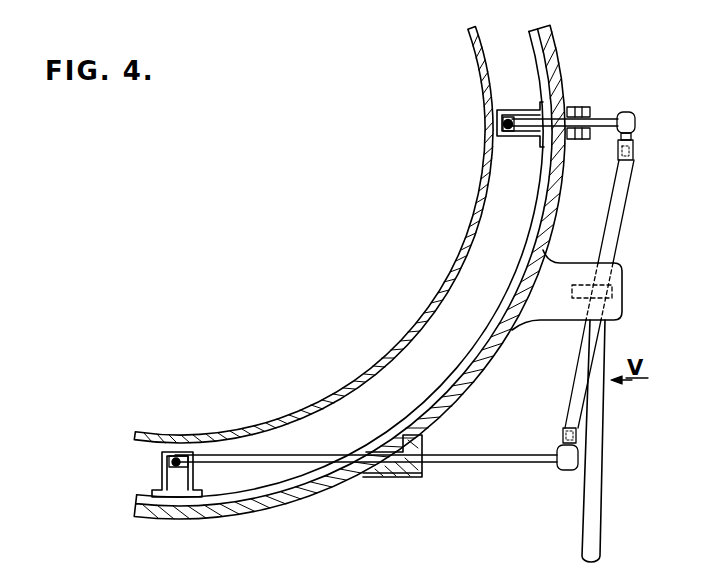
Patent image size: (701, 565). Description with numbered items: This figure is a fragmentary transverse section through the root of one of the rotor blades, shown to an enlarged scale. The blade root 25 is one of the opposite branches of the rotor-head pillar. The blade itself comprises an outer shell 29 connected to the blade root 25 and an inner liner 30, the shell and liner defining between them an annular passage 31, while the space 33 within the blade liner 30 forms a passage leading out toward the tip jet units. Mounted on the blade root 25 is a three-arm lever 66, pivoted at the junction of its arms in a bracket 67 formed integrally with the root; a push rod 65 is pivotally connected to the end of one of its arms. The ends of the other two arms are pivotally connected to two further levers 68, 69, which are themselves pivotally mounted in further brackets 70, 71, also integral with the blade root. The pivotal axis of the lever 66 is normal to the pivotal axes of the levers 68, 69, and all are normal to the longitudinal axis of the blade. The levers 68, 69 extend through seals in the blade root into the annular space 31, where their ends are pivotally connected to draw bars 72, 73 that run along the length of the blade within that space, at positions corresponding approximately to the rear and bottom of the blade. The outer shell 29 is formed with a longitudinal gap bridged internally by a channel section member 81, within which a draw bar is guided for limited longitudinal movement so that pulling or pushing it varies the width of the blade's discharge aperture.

The blade root 25 is at (557, 60).
The outer shell 29 is at (538, 64).
The inner liner 30 is at (481, 92).
The annular passage 31 is at (481, 298).
The space within blade liner 33 is at (348, 255).
The push rod 65 is at (598, 483).
The three-arm lever 66 is at (616, 226).
The bracket 67 is at (548, 313).
The lever 68 is at (598, 121).
The lever 69 is at (468, 461).
The bracket 70 is at (560, 116).
The bracket 71 is at (382, 470).
The draw bar 72 is at (507, 131).
The draw bar 73 is at (172, 467).
The channel section member 81 is at (522, 108).